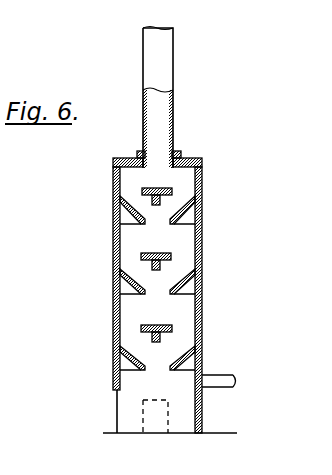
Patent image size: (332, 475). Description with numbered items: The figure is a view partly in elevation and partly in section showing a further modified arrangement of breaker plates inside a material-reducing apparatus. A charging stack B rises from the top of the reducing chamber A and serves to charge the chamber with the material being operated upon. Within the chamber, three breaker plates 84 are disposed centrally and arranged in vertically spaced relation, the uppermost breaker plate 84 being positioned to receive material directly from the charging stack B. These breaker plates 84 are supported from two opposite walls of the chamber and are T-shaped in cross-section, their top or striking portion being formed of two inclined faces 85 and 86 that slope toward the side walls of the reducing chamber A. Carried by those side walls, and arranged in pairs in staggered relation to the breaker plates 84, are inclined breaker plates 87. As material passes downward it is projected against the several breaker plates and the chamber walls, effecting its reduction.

The charging stack B is at (173, 70).
The reducing chamber A is at (113, 228).
The breaker plate 84 is at (160, 188).
The inclined face 85 is at (141, 257).
The inclined face 86 is at (171, 249).
The inclined breaker plate 87 is at (113, 280).